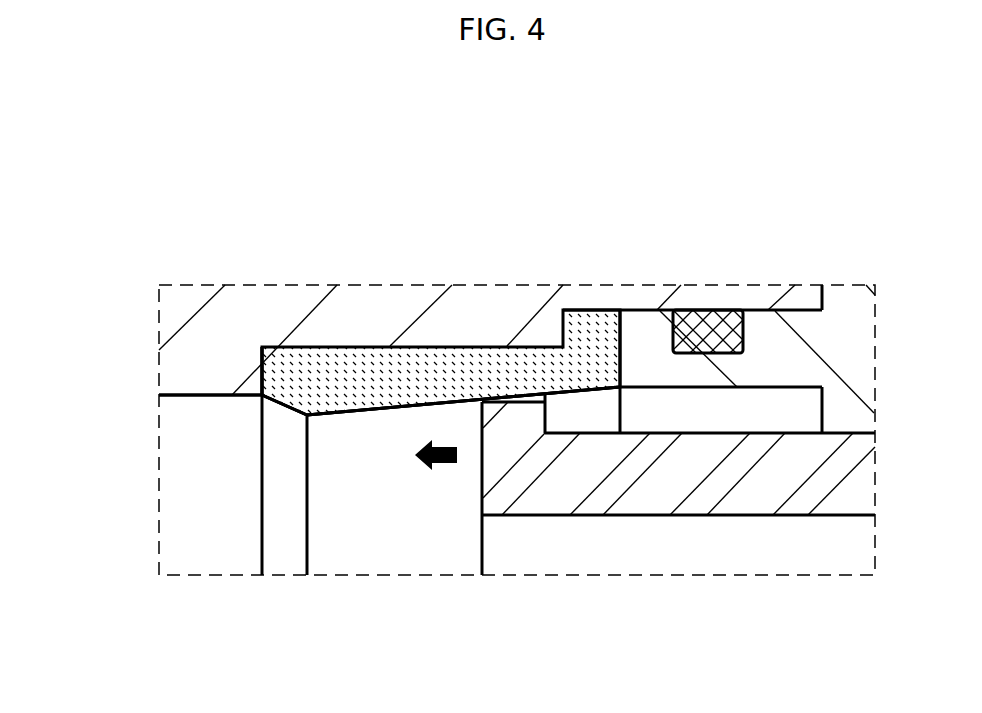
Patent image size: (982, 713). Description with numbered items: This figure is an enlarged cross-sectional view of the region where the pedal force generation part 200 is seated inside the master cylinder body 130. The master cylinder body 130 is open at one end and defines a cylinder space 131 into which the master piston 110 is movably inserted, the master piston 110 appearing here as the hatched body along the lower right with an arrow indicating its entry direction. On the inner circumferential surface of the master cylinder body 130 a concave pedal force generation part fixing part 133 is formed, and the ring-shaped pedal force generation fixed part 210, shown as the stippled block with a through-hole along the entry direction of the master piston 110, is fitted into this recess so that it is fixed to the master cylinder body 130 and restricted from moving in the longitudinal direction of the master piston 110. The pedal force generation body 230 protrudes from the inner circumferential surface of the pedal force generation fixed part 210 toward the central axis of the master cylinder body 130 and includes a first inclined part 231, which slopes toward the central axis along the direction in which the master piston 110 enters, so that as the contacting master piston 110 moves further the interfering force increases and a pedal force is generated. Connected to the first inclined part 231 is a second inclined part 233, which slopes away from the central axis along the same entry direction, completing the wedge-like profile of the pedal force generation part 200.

The master piston 110 is at (653, 492).
The master cylinder body 130 is at (196, 440).
The cylinder space 131 is at (183, 424).
The pedal force generation part fixing part 133 is at (320, 348).
The pedal force generation part 200 is at (428, 318).
The pedal force generation fixed part 210 is at (443, 352).
The pedal force generation body 230 is at (338, 181).
The first inclined part 231 is at (400, 410).
The second inclined part 233 is at (283, 410).